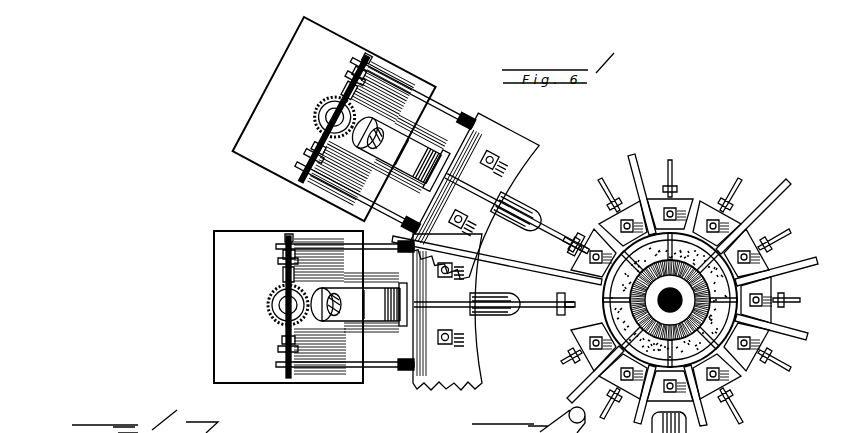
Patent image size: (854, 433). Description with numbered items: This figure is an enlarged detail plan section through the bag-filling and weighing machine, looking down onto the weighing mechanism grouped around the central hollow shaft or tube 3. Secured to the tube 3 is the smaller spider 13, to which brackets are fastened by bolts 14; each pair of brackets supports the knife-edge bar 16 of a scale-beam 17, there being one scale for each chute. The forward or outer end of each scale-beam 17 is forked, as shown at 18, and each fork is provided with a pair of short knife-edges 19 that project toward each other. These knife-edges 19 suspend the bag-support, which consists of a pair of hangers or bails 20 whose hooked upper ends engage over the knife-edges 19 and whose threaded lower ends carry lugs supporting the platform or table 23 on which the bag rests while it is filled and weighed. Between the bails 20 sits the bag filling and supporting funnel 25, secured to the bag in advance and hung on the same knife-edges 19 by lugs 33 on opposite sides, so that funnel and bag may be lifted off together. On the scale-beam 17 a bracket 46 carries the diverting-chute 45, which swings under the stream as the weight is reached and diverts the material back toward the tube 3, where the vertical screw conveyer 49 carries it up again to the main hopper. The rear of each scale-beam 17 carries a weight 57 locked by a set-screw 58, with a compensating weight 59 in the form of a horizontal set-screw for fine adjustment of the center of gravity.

The hollow shaft or tube 3 is at (768, 273).
The spider 13 is at (482, 353).
The bolts 14 is at (500, 167).
The knife-edge bar 16 is at (460, 118).
The scale-beam 17 is at (550, 232).
The forked end of scale-beam 18 is at (441, 105).
The knife-edges 19 is at (342, 83).
The hangers or bails 20 is at (337, 90).
The platform or table 23 is at (265, 158).
The bag filling and supporting funnel 25 is at (318, 113).
The lugs 33 is at (323, 100).
The diverting-chute 45 is at (380, 150).
The bracket 46 is at (396, 168).
The vertical screw conveyer 49 is at (576, 347).
The weights 57 is at (357, 74).
The set-screws 58 is at (616, 227).
The compensating weights 59 is at (572, 368).